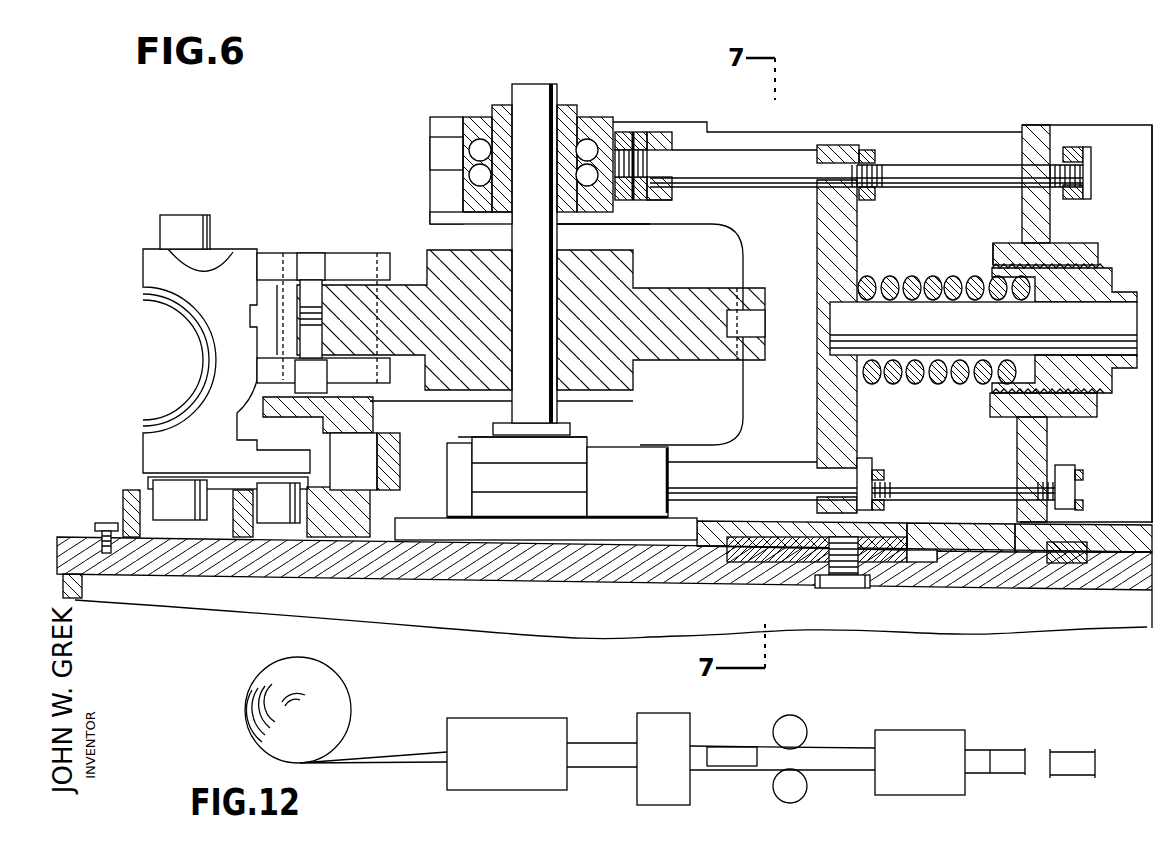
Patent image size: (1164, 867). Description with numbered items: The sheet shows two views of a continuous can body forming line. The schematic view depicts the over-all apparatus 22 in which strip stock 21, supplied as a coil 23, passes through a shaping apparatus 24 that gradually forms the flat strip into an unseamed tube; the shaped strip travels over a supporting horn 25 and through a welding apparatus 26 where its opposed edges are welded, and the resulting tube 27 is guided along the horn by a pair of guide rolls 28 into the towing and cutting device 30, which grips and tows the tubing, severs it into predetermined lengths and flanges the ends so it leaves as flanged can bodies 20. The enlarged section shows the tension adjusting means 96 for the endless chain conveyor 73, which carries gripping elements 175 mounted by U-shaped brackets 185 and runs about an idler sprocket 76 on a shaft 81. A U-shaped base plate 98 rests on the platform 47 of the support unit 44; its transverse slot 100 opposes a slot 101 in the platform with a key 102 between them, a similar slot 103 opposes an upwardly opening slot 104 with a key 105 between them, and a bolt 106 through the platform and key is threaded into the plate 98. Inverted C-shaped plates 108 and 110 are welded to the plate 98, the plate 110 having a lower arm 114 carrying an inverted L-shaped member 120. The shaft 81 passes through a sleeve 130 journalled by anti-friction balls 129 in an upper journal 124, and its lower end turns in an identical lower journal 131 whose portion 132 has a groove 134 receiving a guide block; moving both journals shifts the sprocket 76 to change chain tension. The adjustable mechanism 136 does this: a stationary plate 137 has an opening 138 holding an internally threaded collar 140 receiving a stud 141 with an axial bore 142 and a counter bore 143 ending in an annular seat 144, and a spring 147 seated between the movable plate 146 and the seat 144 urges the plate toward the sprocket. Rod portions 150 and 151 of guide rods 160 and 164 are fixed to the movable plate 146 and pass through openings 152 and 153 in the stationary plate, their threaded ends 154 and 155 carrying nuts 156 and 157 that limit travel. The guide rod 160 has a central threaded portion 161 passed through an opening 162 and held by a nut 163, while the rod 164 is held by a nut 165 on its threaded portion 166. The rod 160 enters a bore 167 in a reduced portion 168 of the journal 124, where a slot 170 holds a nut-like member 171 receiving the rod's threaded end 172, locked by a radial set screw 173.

In FIG. 6, the support unit 44 is at (1150, 596).
In FIG. 6, the platform 47 is at (960, 572).
In FIG. 6, the base plate 98 is at (1000, 556).
In FIG. 6, the slot 101 is at (1066, 565).
In FIG. 6, the key 102 is at (1085, 545).
In FIG. 6, the transverse slot 100 is at (1075, 522).
In FIG. 6, the slot 103 is at (882, 540).
In FIG. 6, the slot 104 is at (940, 560).
In FIG. 6, the key 105 is at (765, 562).
In FIG. 6, the bolt 106 is at (832, 585).
In FIG. 6, the lower arm 114 is at (668, 518).
In FIG. 6, the journal 131 is at (490, 430).
In FIG. 6, the portion 132 is at (590, 447).
In FIG. 6, the groove 134 is at (580, 482).
In FIG. 6, the inverted C-shaped plate 110 is at (787, 242).
In FIG. 6, the shaft 81 is at (542, 314).
In FIG. 6, the idler sprocket 76 is at (645, 290).
In FIG. 6, the inverted L-shaped member 120 is at (436, 188).
In FIG. 6, the tension adjusting means 96 is at (430, 158).
In FIG. 6, the upper journal 124 is at (478, 118).
In FIG. 6, the sleeve 130 is at (575, 105).
In FIG. 6, the anti-friction balls 129 is at (585, 212).
In FIG. 6, the slot 170 is at (630, 130).
In FIG. 6, the threaded end portion 172 is at (650, 166).
In FIG. 6, the radial set screw 173 is at (640, 130).
In FIG. 6, the bore 167 is at (660, 130).
In FIG. 6, the reduced portion 168 is at (672, 200).
In FIG. 6, the nut-like member 171 is at (645, 213).
In FIG. 6, the guide rod 160 is at (752, 145).
In FIG. 6, the rod portion 150 is at (938, 175).
In FIG. 6, the central threaded portion 161 is at (884, 187).
In FIG. 6, the opening 152 is at (1015, 162).
In FIG. 6, the opening 162 is at (838, 145).
In FIG. 6, the nut 163 is at (872, 150).
In FIG. 6, the nut 156 is at (1078, 147).
In FIG. 6, the threaded end portion 154 is at (1090, 168).
In FIG. 6, the inverted C-shaped plate 108 is at (1150, 127).
In FIG. 6, the stationary plate 137 is at (1040, 216).
In FIG. 6, the adjustable mechanism 136 is at (1115, 245).
In FIG. 6, the movable plate 146 is at (850, 396).
In FIG. 6, the internally threaded collar 140 is at (1075, 250).
In FIG. 6, the opening 138 is at (1015, 245).
In FIG. 6, the stud 141 is at (1110, 284).
In FIG. 6, the axial bore 142 is at (1122, 312).
In FIG. 6, the counter bore 143 is at (990, 275).
In FIG. 6, the spring 147 is at (912, 383).
In FIG. 6, the annular seat 144 is at (1010, 420).
In FIG. 6, the rod portion 151 is at (940, 485).
In FIG. 6, the guide rod 164 is at (740, 470).
In FIG. 6, the nut 165 is at (865, 460).
In FIG. 6, the central threaded portion 166 is at (886, 478).
In FIG. 6, the opening 153 is at (1012, 486).
In FIG. 6, the nut 157 is at (1064, 464).
In FIG. 6, the threaded end portion 155 is at (1078, 486).
In FIG. 6, the chain conveyor 73 is at (300, 328).
In FIG. 6, the gripping elements 175 is at (252, 250).
In FIG. 6, the mounting bracket 185 is at (283, 252).
In FIG. 12, the coil 23 is at (330, 698).
In FIG. 12, the strip stock 21 is at (345, 758).
In FIG. 12, the apparatus 22 is at (492, 705).
In FIG. 12, the shaping apparatus 24 is at (524, 762).
In FIG. 12, the welding apparatus 26 is at (674, 762).
In FIG. 12, the tube 27 is at (855, 756).
In FIG. 12, the supporting horn 25 is at (722, 770).
In FIG. 12, the guide rolls 28 is at (794, 722).
In FIG. 12, the towing and cutting device 30 is at (937, 772).
In FIG. 12, the can bodies 20 is at (1065, 748).